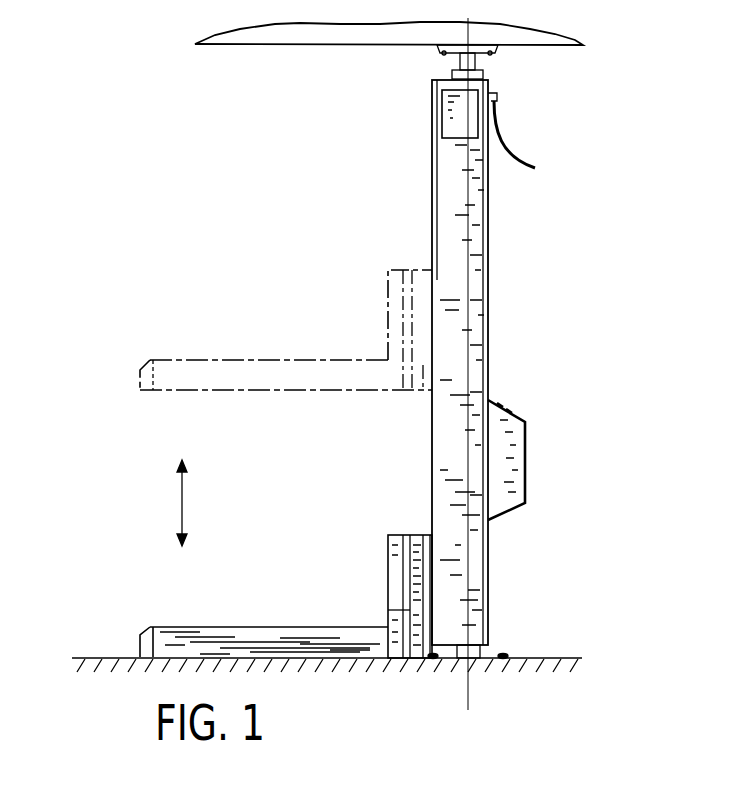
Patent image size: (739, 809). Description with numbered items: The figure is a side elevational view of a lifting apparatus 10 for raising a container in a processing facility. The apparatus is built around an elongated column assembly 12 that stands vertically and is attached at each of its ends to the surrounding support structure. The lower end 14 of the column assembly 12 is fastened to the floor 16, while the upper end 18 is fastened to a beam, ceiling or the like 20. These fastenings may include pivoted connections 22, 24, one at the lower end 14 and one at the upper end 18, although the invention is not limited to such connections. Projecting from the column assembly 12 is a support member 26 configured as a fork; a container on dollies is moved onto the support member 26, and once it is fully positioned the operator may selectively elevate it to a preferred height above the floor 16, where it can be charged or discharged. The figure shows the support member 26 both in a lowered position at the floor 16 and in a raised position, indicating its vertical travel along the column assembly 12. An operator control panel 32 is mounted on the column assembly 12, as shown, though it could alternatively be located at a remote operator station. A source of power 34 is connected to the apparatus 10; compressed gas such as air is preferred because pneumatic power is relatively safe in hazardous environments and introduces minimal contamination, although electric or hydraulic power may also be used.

The lifting apparatus 10 is at (634, 313).
The column assembly 12 is at (489, 553).
The lower end 14 is at (500, 617).
The floor 16 is at (104, 657).
The upper end 18 is at (400, 100).
The beam, ceiling or the like 20 is at (537, 47).
The pivoted connection 22 is at (483, 656).
The pivoted connection 24 is at (460, 62).
The support member 26 is at (208, 360).
The operator control panel 32 is at (520, 415).
The source of power 34 is at (510, 171).